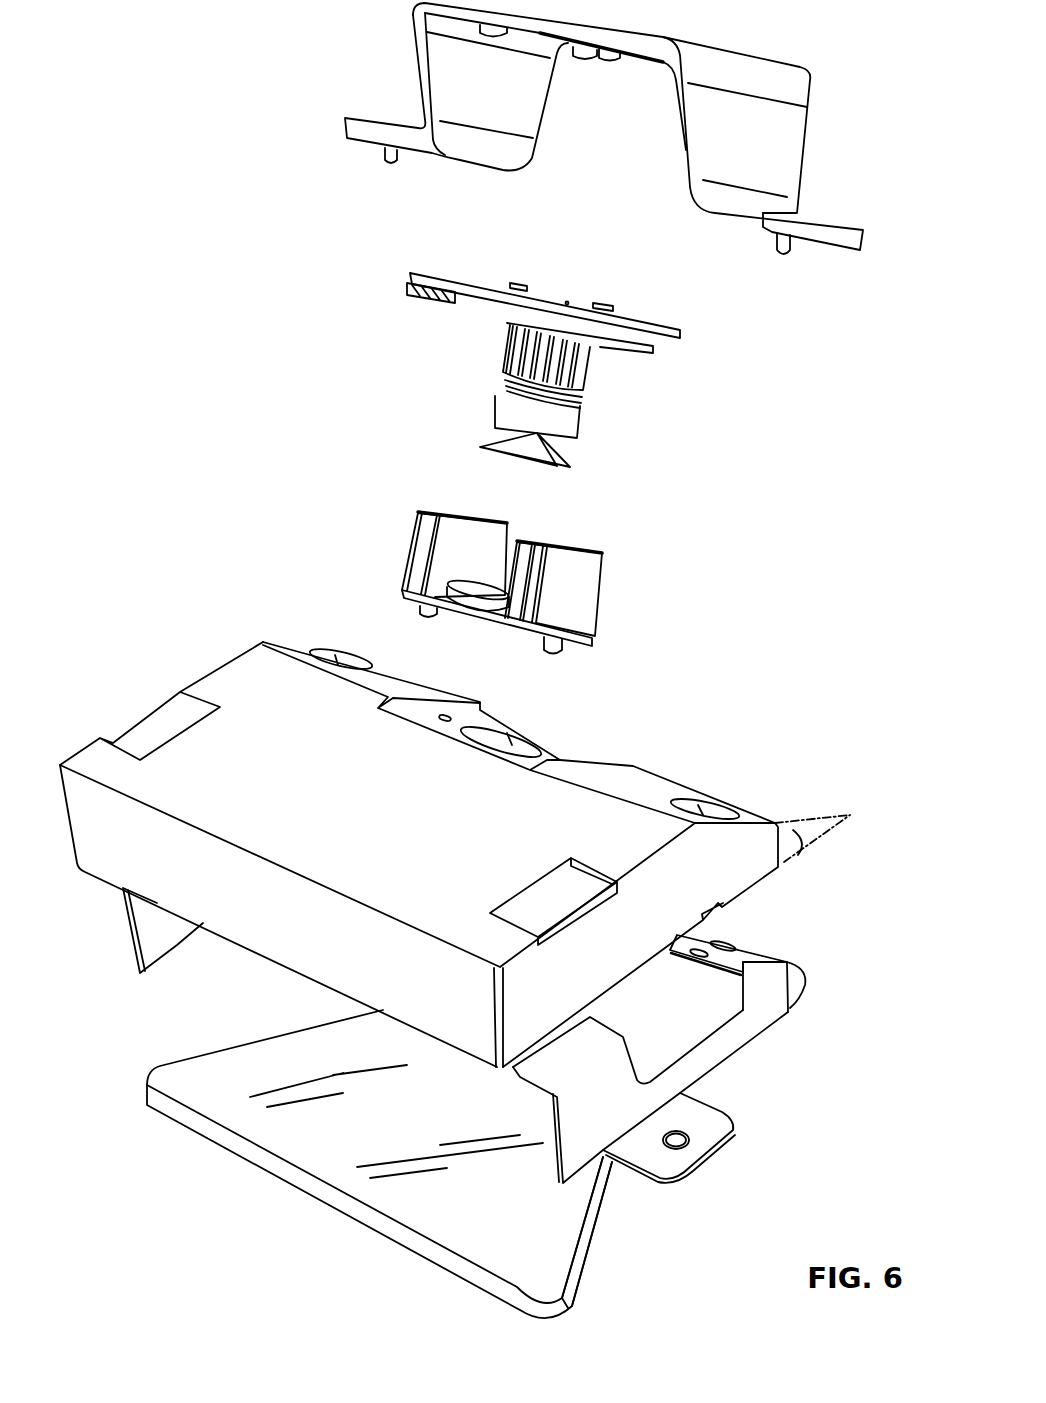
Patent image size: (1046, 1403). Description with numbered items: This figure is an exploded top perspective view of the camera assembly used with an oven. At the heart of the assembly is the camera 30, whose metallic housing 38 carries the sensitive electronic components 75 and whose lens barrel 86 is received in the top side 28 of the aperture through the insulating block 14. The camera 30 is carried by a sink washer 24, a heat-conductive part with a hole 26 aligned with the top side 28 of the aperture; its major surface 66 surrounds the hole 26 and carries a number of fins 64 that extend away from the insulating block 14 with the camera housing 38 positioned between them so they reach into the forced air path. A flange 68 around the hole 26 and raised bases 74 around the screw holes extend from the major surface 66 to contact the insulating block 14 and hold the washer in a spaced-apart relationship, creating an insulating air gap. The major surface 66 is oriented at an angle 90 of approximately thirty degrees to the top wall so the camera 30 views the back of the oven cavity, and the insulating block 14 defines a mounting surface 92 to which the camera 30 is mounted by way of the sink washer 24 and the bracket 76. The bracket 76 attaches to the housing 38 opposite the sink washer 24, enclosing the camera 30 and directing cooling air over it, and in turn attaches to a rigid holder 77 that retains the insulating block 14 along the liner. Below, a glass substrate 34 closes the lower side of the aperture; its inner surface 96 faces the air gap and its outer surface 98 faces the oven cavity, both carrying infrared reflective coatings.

The insulating block 14 is at (444, 854).
The sink washer 24 is at (503, 579).
The hole 26 is at (480, 590).
The top side of the aperture 28 is at (518, 750).
The camera 30 is at (563, 370).
The glass substrate 34 is at (427, 1255).
The housing 38 is at (520, 362).
The fins 64 is at (420, 520).
The major surface 66 is at (422, 602).
The flange 68 is at (473, 622).
The bases 74 is at (563, 643).
The electronic components 75 is at (473, 303).
The bracket 76 is at (797, 90).
The holder 77 is at (780, 990).
The lens barrel 86 is at (558, 447).
The angle 90 is at (793, 847).
The mounting surface 92 is at (647, 780).
The inner surface 96 is at (553, 1222).
The outer surface 98 is at (306, 1204).